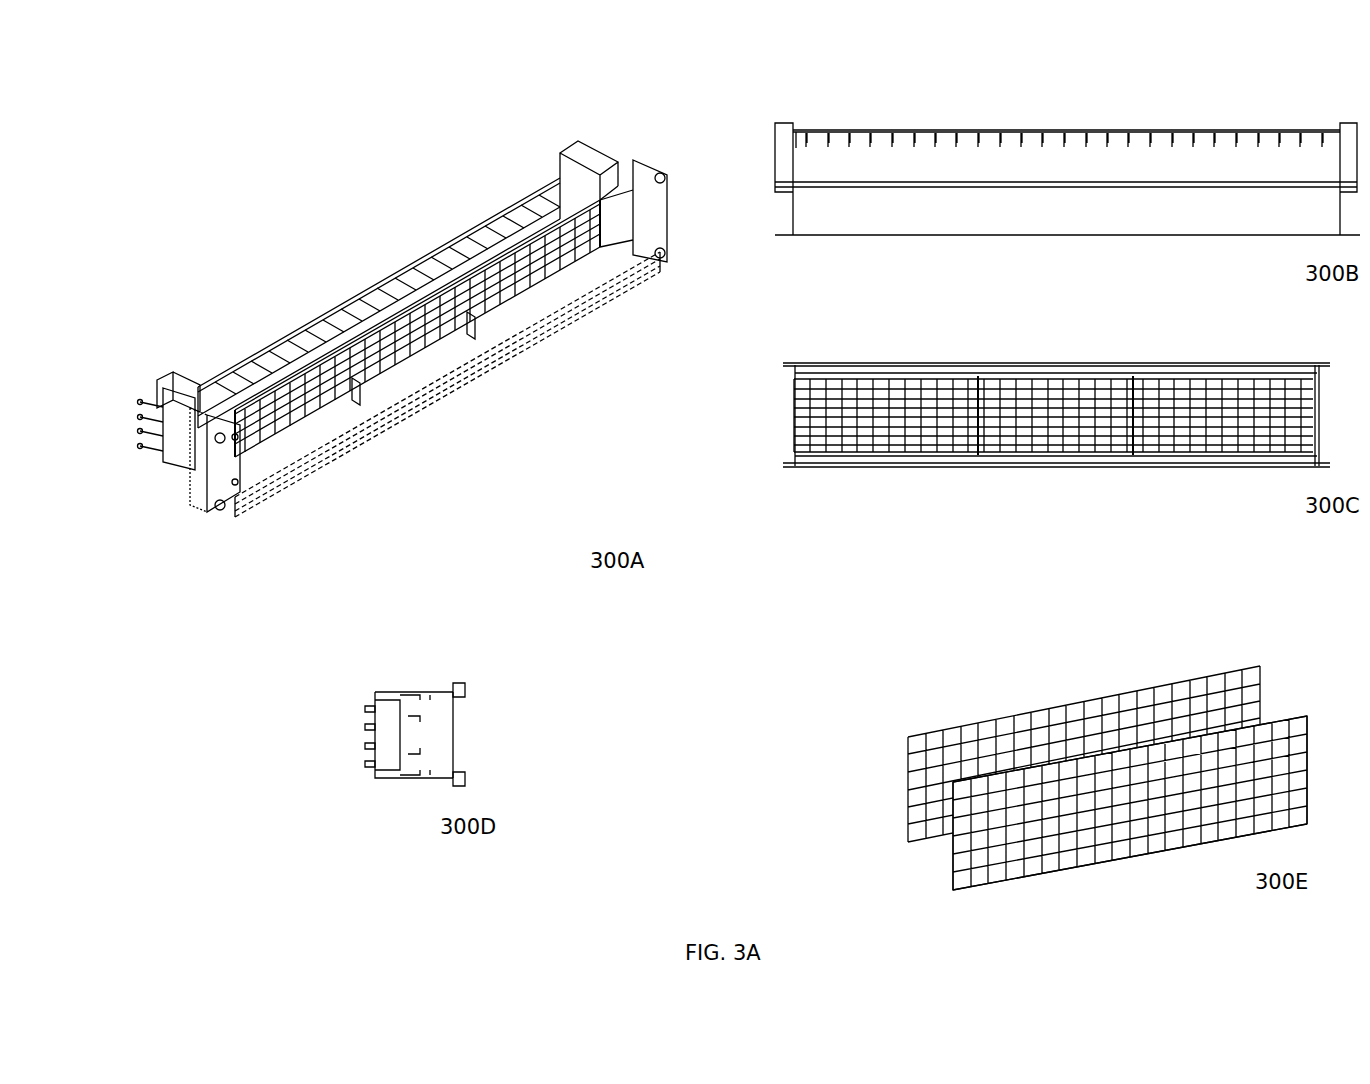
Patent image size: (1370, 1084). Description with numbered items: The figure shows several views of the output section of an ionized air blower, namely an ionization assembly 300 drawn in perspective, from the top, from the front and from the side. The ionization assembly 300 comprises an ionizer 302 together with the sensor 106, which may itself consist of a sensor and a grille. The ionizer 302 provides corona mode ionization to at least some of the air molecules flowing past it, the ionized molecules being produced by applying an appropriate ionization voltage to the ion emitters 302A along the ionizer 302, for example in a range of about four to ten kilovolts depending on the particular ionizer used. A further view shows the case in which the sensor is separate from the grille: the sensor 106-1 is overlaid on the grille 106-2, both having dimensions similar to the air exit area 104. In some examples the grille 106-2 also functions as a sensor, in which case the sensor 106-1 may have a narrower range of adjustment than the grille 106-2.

The ionization assembly 300 is at (749, 436).
The ionizer 302 is at (302, 294).
The ion emitters 302A is at (925, 133).
The air exit area 104 is at (432, 369).
The sensor 106 is at (292, 423).
The sensor 106-1 is at (1303, 708).
The grille 106-2 is at (1012, 708).